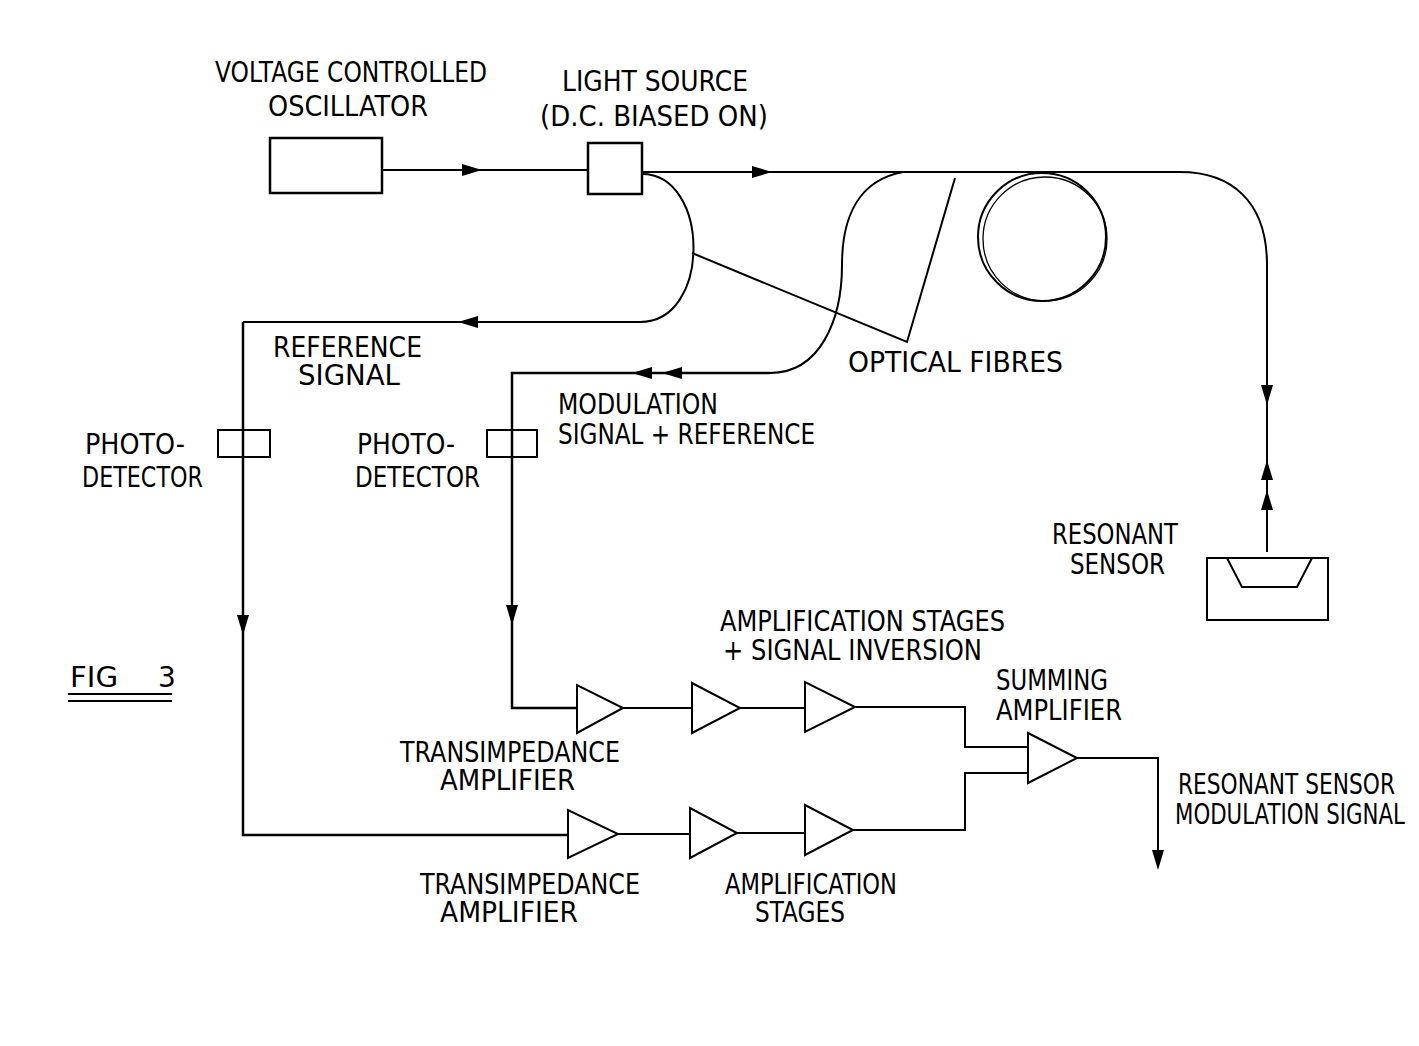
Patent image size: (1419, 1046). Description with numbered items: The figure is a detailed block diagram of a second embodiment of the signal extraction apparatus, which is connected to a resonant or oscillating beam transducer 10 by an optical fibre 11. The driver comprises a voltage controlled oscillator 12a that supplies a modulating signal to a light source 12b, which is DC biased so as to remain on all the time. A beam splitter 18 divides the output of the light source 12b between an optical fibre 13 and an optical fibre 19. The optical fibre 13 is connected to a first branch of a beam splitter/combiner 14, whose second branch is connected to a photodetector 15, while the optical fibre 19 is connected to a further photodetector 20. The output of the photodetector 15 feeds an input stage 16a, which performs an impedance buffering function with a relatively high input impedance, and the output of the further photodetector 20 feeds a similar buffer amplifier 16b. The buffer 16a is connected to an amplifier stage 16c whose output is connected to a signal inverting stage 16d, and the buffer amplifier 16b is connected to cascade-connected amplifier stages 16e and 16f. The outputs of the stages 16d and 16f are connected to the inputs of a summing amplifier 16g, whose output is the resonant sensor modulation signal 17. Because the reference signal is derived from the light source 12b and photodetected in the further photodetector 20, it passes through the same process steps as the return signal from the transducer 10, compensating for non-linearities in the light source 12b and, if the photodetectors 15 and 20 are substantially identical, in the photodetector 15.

The resonant or oscillating beam transducer 10 is at (1303, 620).
The optical fibre 11 is at (1240, 185).
The voltage controlled oscillator 12a is at (330, 193).
The light source 12b is at (625, 194).
The optical fibre 13 is at (810, 170).
The beam splitter/combiner 14 is at (922, 148).
The photodetector 15 is at (522, 457).
The input stage 16a is at (603, 695).
The input stage 16b is at (593, 815).
The amplifier stage 16c is at (716, 725).
The signal inverting stage 16d is at (828, 718).
The amplifier stage 16e is at (715, 815).
The amplifier stage 16f is at (827, 812).
The summing amplifier 16g is at (1055, 770).
The resonant sensor modulation signal output 17 is at (1140, 758).
The beam splitter 18 is at (657, 160).
The optical fibre 19 is at (555, 320).
The further photodetector 20 is at (263, 457).